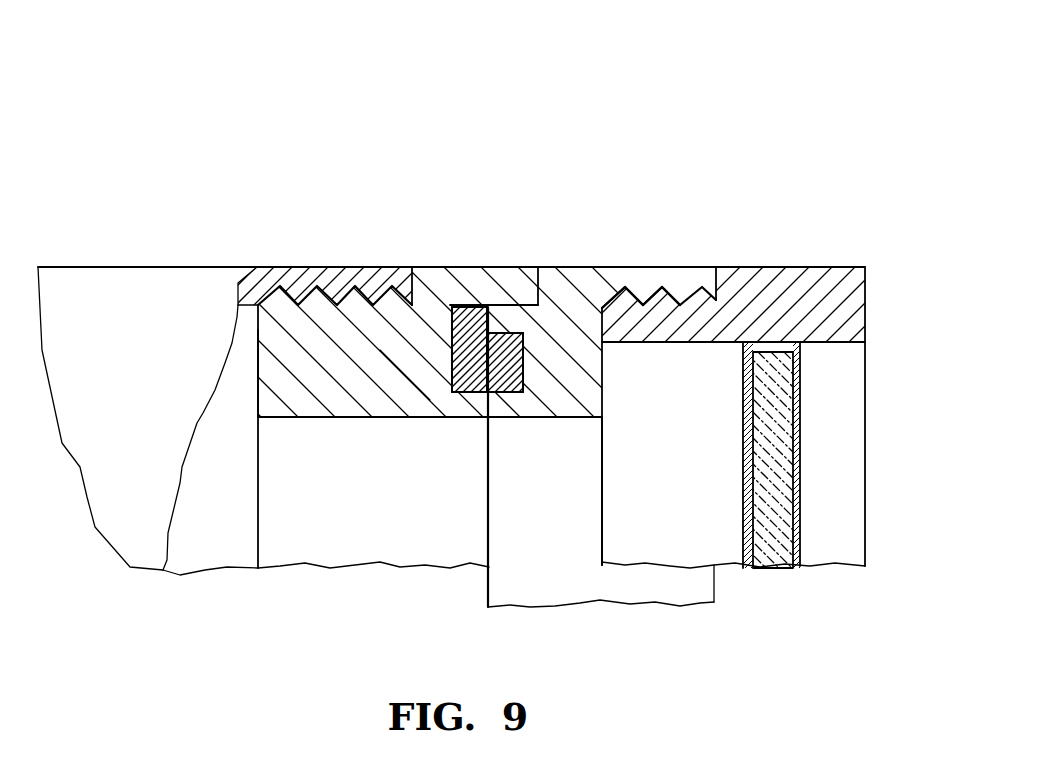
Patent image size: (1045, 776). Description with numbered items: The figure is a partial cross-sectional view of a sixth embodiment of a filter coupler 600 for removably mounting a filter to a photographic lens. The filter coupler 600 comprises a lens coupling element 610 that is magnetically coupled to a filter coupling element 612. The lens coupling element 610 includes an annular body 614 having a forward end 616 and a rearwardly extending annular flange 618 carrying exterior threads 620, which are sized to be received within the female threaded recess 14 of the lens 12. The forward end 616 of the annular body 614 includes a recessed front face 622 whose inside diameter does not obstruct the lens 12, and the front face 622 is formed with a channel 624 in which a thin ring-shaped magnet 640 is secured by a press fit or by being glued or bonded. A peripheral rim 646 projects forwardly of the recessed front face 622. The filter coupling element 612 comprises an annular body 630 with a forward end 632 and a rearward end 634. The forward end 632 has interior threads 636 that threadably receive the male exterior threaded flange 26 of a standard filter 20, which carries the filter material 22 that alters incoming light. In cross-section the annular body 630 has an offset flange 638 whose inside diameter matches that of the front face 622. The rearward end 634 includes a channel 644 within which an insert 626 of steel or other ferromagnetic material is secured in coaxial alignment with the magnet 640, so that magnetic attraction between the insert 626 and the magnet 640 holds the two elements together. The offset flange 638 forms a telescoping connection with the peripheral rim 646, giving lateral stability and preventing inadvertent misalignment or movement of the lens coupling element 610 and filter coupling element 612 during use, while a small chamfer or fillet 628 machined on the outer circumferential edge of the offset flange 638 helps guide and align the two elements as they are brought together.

The lens 12 is at (104, 265).
The threaded recess 14 is at (307, 266).
The filter 20 is at (771, 412).
The filter material 22 is at (777, 555).
The exterior threaded flange 26 is at (625, 300).
The filter coupler 600 is at (408, 352).
The lens coupling element 610 is at (452, 272).
The filter coupling element 612 is at (636, 265).
The annular body 614 is at (430, 265).
The forward end 616 is at (560, 266).
The annular flange 618 is at (258, 392).
The exterior threads 620 is at (314, 320).
The recessed front face 622 is at (487, 405).
The channel 624 is at (427, 343).
The insert 626 is at (505, 392).
The chamfer or fillet 628 is at (487, 268).
The annular body 630 is at (653, 290).
The forward end 632 is at (742, 280).
The rearward end 634 is at (488, 478).
The interior threads 636 is at (660, 297).
The offset flange 638 is at (512, 275).
The magnet 640 is at (452, 365).
The channel 644 is at (600, 418).
The peripheral rim 646 is at (522, 276).